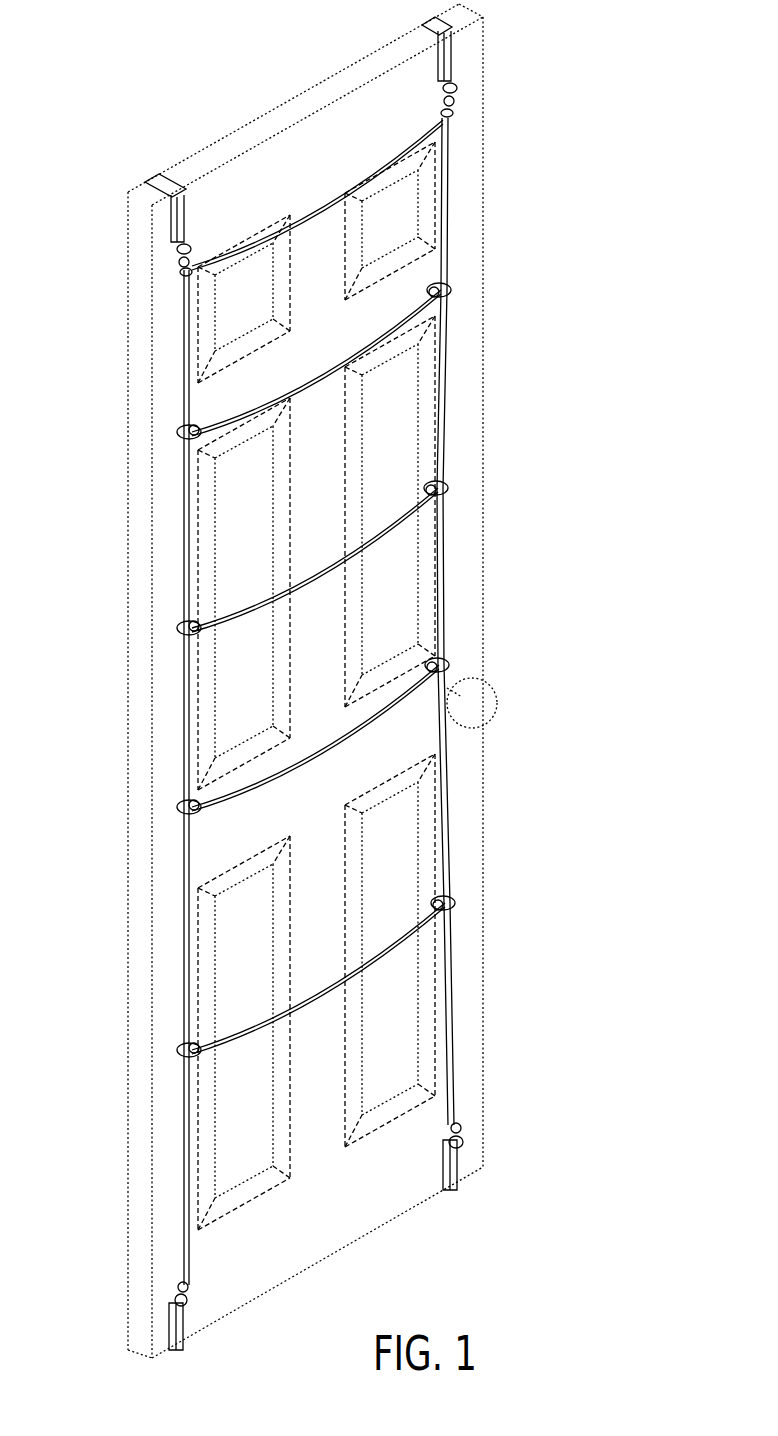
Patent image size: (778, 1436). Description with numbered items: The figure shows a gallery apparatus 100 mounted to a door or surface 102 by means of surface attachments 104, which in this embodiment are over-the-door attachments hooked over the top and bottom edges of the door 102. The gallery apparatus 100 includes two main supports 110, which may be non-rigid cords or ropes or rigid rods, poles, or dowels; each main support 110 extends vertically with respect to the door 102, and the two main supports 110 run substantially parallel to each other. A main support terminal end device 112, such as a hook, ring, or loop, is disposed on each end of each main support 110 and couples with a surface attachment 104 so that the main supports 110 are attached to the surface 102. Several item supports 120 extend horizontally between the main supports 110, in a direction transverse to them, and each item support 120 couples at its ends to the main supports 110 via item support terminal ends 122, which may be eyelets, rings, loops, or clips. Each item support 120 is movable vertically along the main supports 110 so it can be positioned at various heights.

The gallery apparatus 100 is at (335, 675).
The door or surface 102 is at (134, 905).
The surface attachment 104 is at (424, 23).
The main support 110 is at (446, 595).
The main support terminal end device 112 is at (176, 262).
The item support 120 is at (343, 565).
The item support terminal end 122 is at (448, 485).